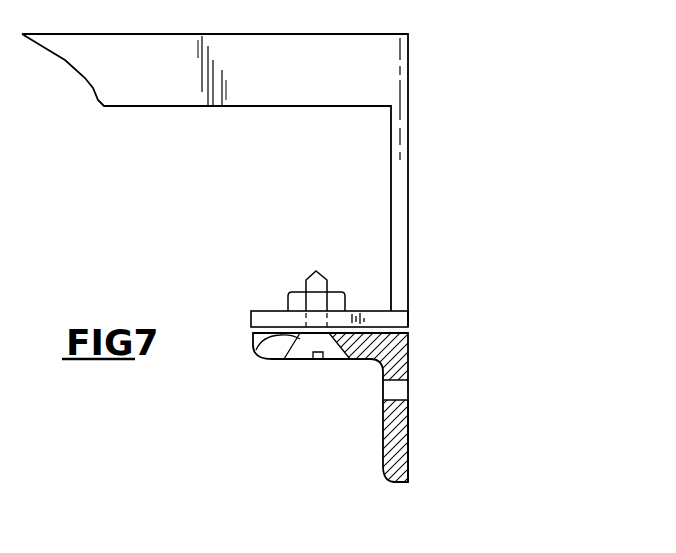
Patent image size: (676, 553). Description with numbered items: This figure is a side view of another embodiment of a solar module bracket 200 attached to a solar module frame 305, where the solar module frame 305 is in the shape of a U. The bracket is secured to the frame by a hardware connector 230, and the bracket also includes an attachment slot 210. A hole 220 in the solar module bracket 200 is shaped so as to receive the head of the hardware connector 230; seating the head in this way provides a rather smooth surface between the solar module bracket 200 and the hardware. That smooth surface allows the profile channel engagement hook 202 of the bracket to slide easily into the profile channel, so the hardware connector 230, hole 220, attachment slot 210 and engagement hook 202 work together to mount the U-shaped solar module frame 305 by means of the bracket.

The solar module bracket 200 is at (382, 447).
The profile channel engagement hook 202 is at (412, 436).
The attachment slot 210 is at (412, 389).
The hole 220 is at (256, 343).
The hardware connector 230 is at (301, 272).
The solar module frame 305 is at (415, 158).